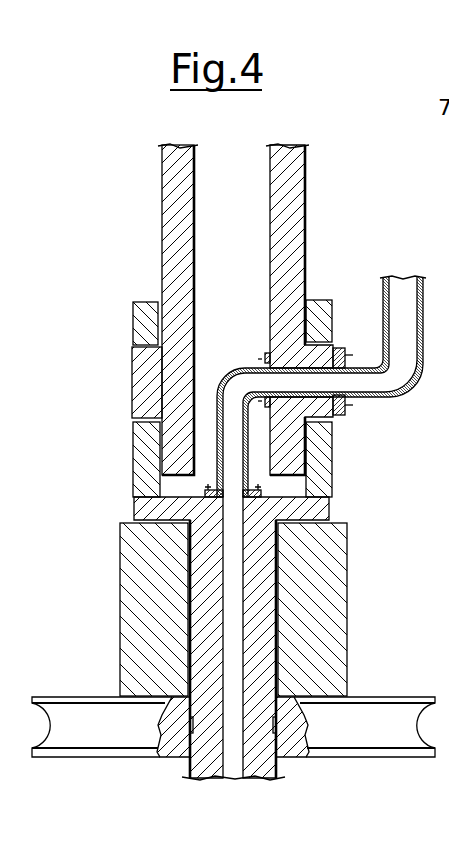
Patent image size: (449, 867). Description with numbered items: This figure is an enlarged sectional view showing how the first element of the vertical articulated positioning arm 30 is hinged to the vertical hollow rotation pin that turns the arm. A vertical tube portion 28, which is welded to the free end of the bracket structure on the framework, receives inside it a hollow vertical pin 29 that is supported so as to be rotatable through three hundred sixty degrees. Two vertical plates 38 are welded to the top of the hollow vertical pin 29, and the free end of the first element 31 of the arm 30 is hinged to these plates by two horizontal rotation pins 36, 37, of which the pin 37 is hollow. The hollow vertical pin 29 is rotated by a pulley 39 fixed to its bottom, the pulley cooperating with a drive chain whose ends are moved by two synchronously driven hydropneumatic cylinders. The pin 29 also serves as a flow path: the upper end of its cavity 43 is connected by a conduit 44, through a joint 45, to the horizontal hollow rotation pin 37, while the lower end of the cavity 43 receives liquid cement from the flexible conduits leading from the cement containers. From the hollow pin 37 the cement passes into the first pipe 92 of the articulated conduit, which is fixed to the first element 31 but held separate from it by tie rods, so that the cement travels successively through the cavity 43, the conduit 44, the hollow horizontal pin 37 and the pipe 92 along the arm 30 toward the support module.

The vertical tube portion 28 is at (323, 575).
The hollow vertical pin 29 is at (205, 572).
The vertical articulated positioning arm 30 is at (305, 260).
The first element of the articulated arm 31 is at (175, 233).
The horizontal rotation pin 36 is at (145, 382).
The horizontal hollow rotation pin 37 is at (334, 347).
The vertical plates 38 is at (146, 462).
The pulley 39 is at (383, 717).
The cavity of the hollow vertical pin 43 is at (235, 632).
The conduit 44 is at (227, 372).
The joint 45 is at (265, 356).
The first pipe 92 is at (421, 332).